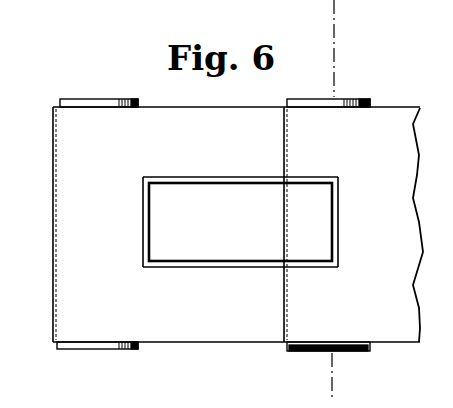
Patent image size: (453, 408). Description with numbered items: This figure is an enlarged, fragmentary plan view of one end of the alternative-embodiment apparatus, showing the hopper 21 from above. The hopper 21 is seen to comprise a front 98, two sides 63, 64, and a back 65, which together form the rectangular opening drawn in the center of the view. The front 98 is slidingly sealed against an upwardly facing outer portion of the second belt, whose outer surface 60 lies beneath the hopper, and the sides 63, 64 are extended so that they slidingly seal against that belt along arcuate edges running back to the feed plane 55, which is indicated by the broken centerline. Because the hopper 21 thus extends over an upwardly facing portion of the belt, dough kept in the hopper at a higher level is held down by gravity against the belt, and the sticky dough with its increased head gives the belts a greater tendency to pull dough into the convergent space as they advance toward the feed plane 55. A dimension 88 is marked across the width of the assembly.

The hopper 21 is at (168, 272).
The feed plane 55 is at (336, 33).
The outer surface 60 is at (313, 186).
The side 63 is at (220, 267).
The side 64 is at (222, 177).
The back 65 is at (143, 200).
The height dimension 88 is at (72, 107).
The front 98 is at (339, 219).